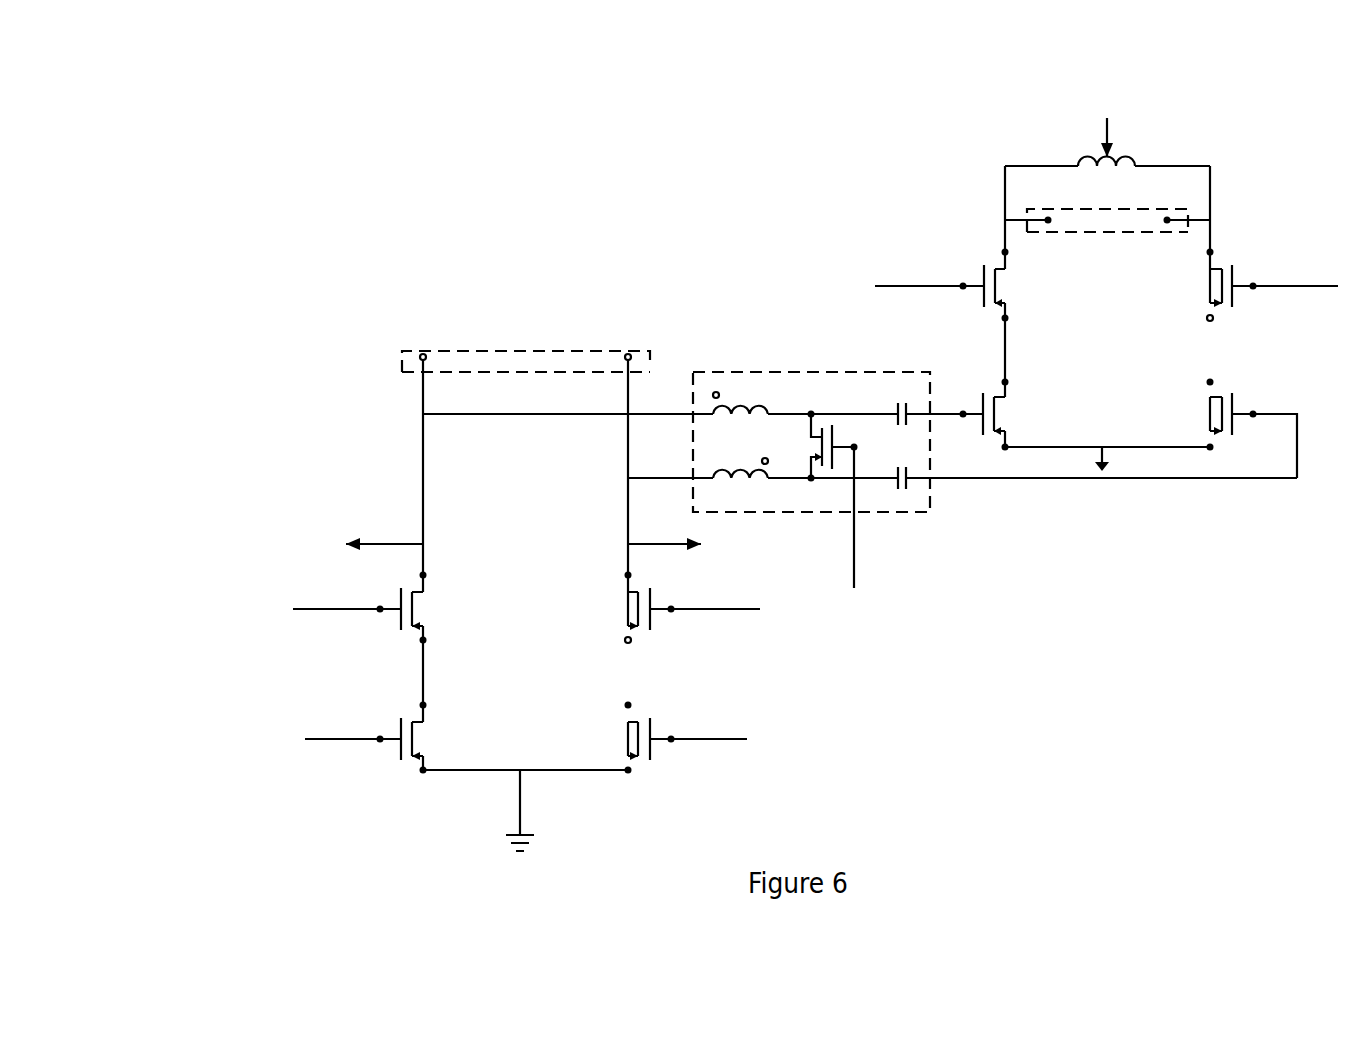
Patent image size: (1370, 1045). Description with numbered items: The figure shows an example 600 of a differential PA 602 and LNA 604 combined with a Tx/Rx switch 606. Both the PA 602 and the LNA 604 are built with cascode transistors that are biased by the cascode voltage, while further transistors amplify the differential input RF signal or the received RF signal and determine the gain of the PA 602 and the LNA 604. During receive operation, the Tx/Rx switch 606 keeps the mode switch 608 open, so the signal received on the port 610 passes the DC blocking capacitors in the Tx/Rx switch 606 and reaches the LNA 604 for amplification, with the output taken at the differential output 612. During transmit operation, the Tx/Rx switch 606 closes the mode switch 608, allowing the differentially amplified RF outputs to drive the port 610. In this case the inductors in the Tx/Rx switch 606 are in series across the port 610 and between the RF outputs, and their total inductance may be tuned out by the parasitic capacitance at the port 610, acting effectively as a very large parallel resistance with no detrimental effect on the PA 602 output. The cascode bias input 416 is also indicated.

The example of a differential PA and LNA with Tx/Rx switch 600 is at (202, 172).
The differential PA 602 is at (363, 808).
The LNA 604 is at (957, 145).
The Tx/Rx switch 606 is at (770, 372).
The mode switch 608 is at (842, 444).
The port 610 is at (540, 351).
The differential output 612 is at (1112, 209).
The cascode bias voltage input 416 is at (316, 611).